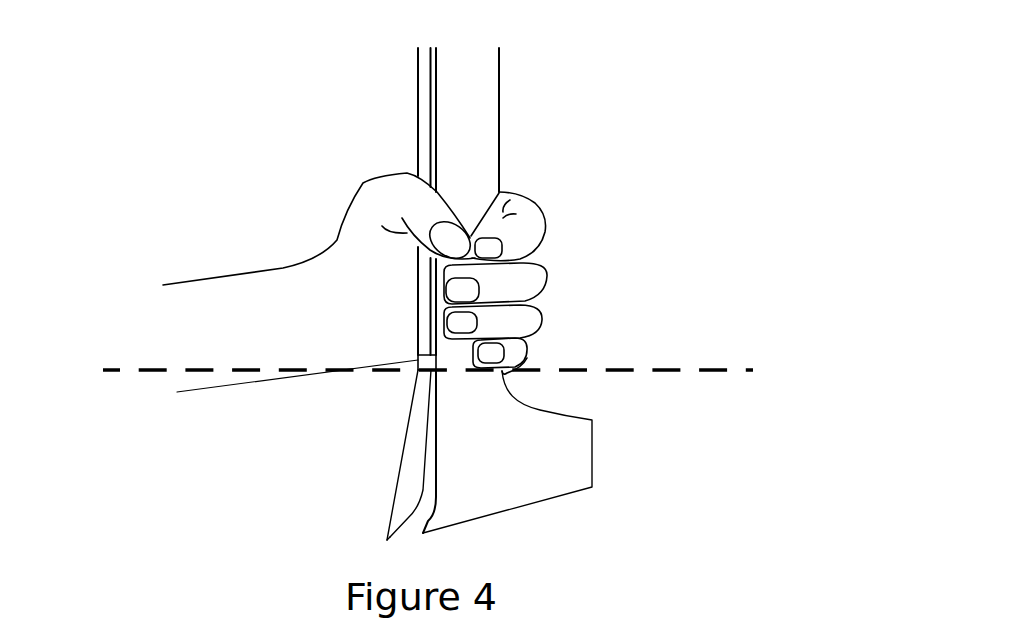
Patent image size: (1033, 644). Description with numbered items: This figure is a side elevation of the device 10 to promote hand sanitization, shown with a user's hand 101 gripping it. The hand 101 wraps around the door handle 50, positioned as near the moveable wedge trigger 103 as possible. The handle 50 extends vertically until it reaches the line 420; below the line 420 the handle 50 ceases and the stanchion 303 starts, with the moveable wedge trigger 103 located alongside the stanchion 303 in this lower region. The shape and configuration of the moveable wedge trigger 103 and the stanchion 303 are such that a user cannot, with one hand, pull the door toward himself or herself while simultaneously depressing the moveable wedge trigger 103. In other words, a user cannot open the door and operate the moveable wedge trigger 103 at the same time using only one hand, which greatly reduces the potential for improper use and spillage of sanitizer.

The device to promote hand sanitization 10 is at (384, 115).
The door handle 50 is at (483, 143).
The hand 101 is at (253, 287).
The moveable wedge trigger 103 is at (395, 507).
The stanchion 303 is at (518, 485).
The line 420 is at (772, 368).